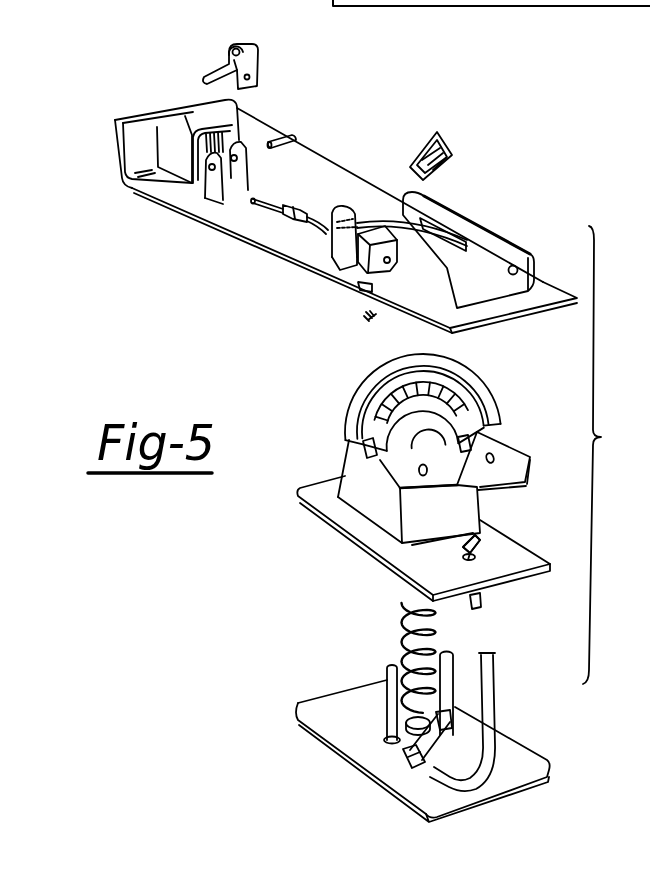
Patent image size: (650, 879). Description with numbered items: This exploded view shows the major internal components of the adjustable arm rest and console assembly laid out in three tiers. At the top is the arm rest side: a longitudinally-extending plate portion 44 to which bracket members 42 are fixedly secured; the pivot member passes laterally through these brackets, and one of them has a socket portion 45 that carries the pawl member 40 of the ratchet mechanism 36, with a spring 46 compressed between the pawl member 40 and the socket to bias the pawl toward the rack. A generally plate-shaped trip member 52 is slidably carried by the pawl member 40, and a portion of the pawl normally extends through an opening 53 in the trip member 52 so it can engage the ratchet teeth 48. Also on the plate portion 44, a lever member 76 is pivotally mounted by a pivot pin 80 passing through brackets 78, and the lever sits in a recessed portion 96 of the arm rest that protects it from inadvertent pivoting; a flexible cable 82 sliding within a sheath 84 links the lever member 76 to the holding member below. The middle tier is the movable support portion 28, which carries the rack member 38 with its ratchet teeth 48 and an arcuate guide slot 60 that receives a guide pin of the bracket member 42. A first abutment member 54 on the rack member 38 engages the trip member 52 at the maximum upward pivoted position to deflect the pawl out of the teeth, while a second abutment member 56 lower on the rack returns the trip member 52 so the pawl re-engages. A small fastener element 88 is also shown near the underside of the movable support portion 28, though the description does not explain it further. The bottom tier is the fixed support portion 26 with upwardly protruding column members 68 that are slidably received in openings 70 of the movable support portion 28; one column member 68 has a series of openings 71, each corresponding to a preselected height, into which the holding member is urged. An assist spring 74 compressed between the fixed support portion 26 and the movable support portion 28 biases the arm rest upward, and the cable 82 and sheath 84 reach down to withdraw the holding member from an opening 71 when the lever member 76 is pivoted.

The fixed support portion 26 is at (348, 722).
The movable support portion 28 is at (398, 553).
The ratchet mechanism 36 is at (328, 342).
The rack member 38 is at (450, 412).
The pawl member 40 is at (380, 274).
The bracket member 42 is at (463, 232).
The plate portion 44 is at (288, 243).
The socket portion 45 is at (360, 283).
The spring 46 is at (375, 318).
The ratchet teeth 48 is at (422, 382).
The trip member 52 is at (450, 145).
The opening 53 is at (432, 147).
The first abutment member 54 is at (490, 432).
The second abutment member 56 is at (366, 443).
The guide slot 60 is at (420, 352).
The column member 68 is at (453, 660).
The opening 70 is at (408, 755).
The opening 71 is at (412, 712).
The assist spring 74 is at (410, 610).
The lever member 76 is at (236, 48).
The bracket 78 is at (232, 170).
The pivot pin 80 is at (283, 138).
The flexible cable 82 is at (258, 200).
The sheath 84 is at (320, 222).
The screw 88 is at (463, 542).
The recessed portion 96 is at (205, 140).